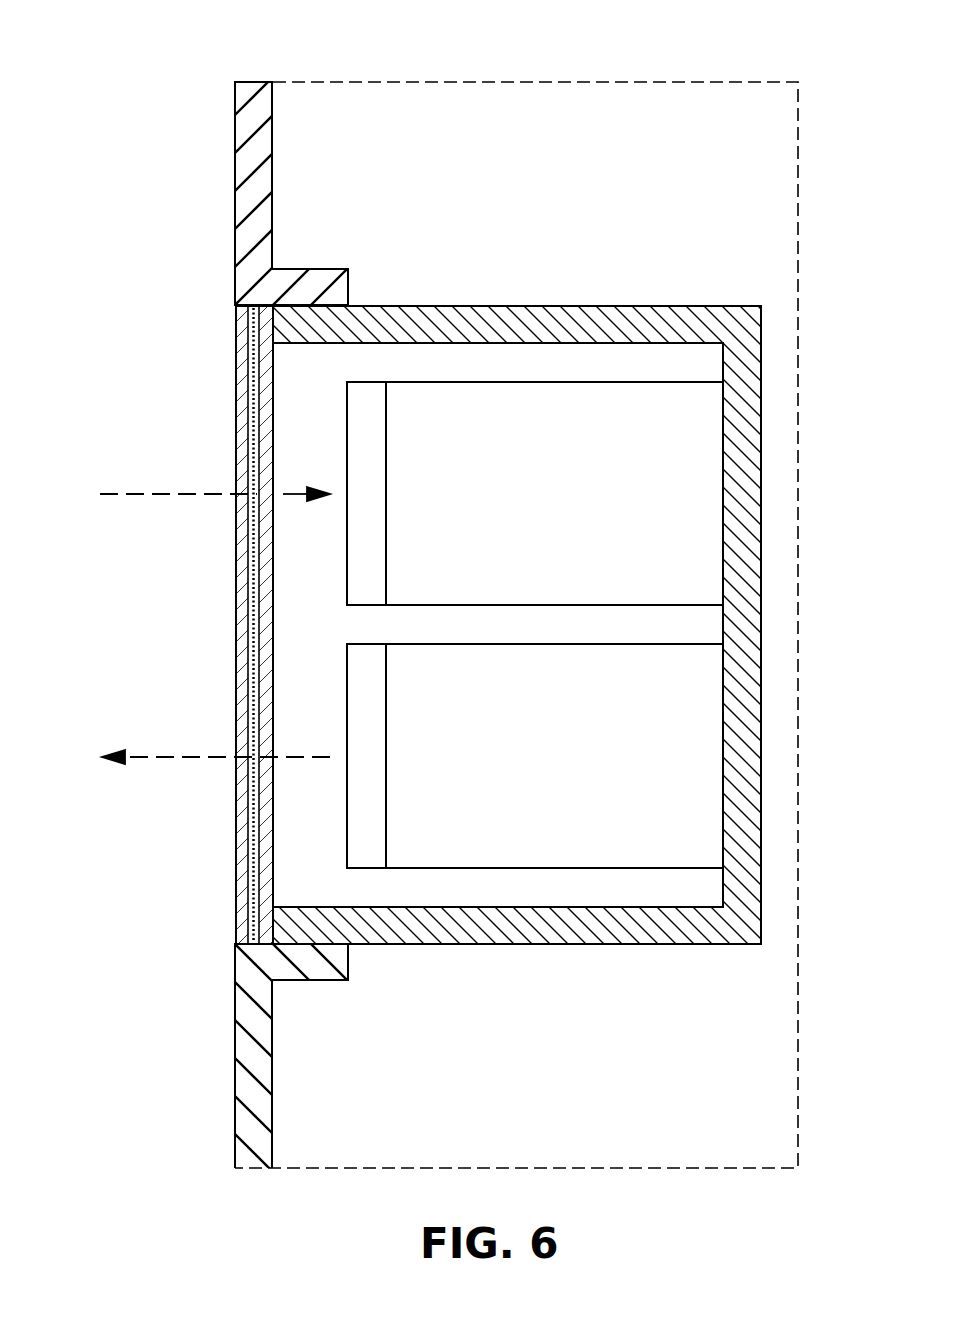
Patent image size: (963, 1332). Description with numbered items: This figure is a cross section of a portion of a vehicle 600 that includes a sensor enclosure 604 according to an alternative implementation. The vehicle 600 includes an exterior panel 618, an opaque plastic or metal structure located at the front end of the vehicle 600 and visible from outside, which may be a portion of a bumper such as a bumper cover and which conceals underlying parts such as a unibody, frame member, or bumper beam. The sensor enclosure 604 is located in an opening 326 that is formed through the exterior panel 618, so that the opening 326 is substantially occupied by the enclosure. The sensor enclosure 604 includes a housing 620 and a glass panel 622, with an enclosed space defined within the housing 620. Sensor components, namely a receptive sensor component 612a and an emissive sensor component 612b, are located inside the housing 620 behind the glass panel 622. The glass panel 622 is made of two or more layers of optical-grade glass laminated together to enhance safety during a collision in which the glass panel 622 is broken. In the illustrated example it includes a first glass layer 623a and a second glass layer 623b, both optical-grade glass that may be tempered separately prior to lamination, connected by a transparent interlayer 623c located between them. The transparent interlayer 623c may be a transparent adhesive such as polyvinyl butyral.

The vehicle 600 is at (112, 38).
The exterior panel 618 is at (235, 141).
The sensor enclosure 604 is at (232, 626).
The glass panel 622 is at (235, 395).
The first glass layer 623a is at (243, 588).
The second glass layer 623b is at (266, 625).
The transparent interlayer 623c is at (256, 663).
The receptive sensor component 612a is at (535, 493).
The emissive sensor component 612b is at (535, 756).
The housing 620 is at (761, 518).
The opening 326 is at (333, 944).